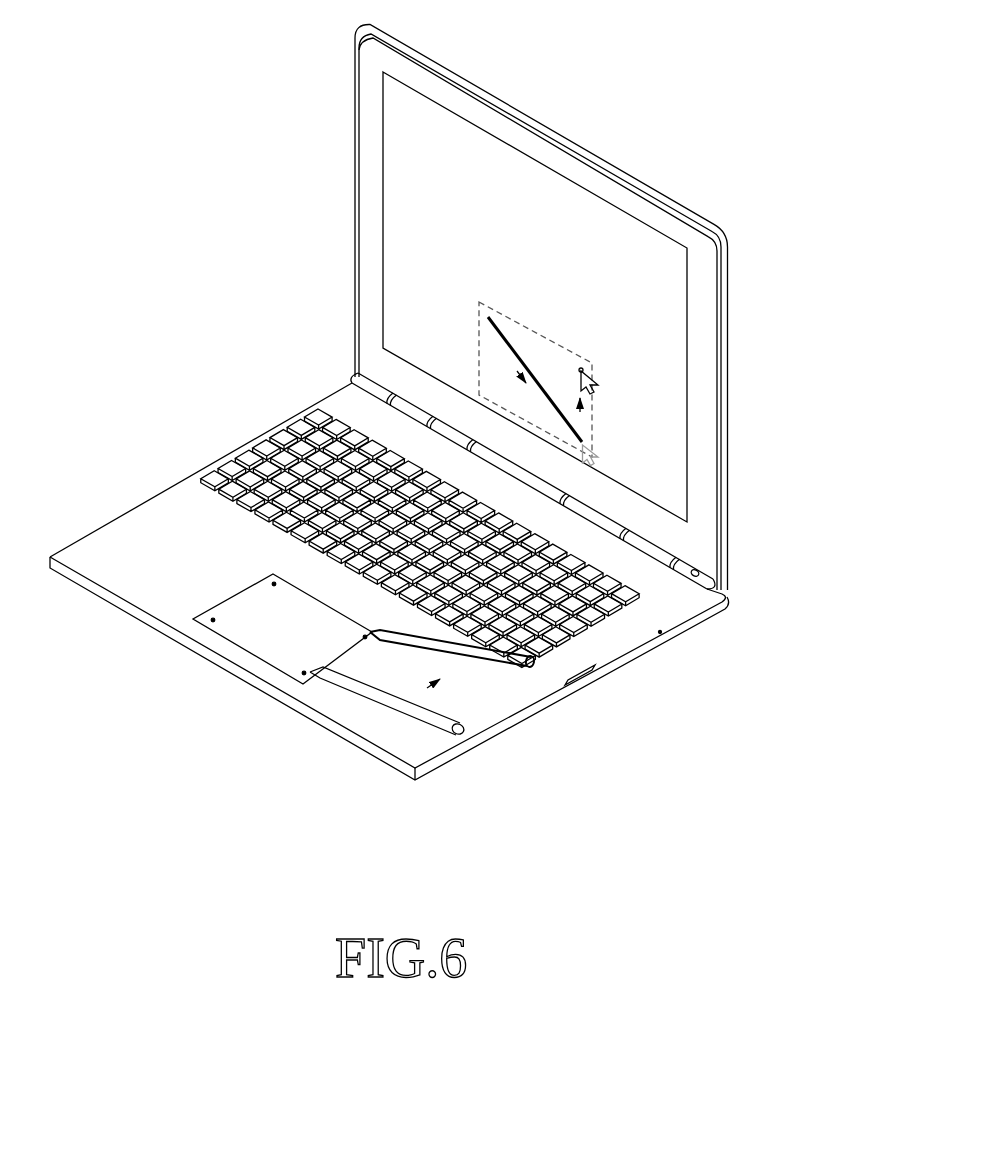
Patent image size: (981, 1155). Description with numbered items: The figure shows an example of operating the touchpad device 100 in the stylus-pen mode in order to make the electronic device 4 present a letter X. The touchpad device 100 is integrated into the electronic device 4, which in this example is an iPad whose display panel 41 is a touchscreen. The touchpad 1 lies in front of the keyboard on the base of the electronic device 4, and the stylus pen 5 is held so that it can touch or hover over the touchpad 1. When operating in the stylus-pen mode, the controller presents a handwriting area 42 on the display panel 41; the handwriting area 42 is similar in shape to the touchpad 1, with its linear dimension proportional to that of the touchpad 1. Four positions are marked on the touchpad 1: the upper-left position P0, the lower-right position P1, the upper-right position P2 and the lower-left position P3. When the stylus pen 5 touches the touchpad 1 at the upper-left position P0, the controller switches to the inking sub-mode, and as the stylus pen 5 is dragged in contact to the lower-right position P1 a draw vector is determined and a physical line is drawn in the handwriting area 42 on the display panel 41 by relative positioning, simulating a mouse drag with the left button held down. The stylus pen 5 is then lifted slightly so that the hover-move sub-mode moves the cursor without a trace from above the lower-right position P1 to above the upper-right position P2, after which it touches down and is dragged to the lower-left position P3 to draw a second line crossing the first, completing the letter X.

The touchpad device 100 is at (187, 622).
The electronic device 4 is at (712, 300).
The display panel 41 is at (673, 370).
The handwriting area 42 is at (478, 357).
The touchpad 1 is at (252, 643).
The stylus pen 5 is at (474, 660).
The upper-left position P0 is at (272, 582).
The lower-right position P1 is at (304, 676).
The upper-right position P2 is at (366, 640).
The lower-left position P3 is at (212, 622).